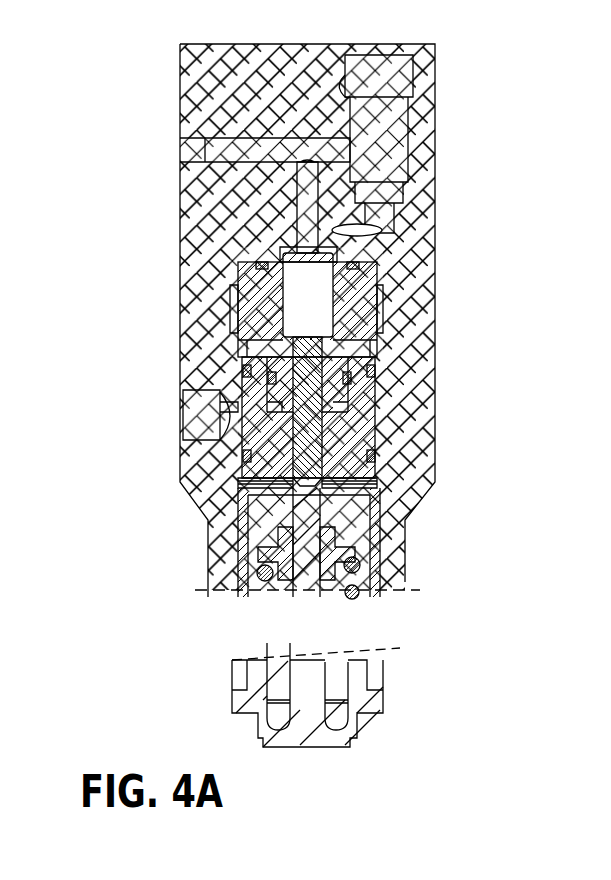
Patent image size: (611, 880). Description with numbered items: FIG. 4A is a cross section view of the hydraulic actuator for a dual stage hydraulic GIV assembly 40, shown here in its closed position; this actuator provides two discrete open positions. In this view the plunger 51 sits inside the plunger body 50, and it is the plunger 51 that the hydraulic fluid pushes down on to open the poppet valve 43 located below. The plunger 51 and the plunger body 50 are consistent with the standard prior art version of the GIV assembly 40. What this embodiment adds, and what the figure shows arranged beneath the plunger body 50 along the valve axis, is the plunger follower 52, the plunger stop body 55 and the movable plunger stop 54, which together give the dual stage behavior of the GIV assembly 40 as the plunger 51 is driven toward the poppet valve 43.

The GIV assembly 40 is at (478, 130).
The poppet valve 43 is at (307, 710).
The plunger body 50 is at (258, 293).
The plunger 51 is at (308, 268).
The plunger follower 52 is at (307, 347).
The movable plunger stop 54 is at (330, 367).
The plunger stop body 55 is at (380, 473).